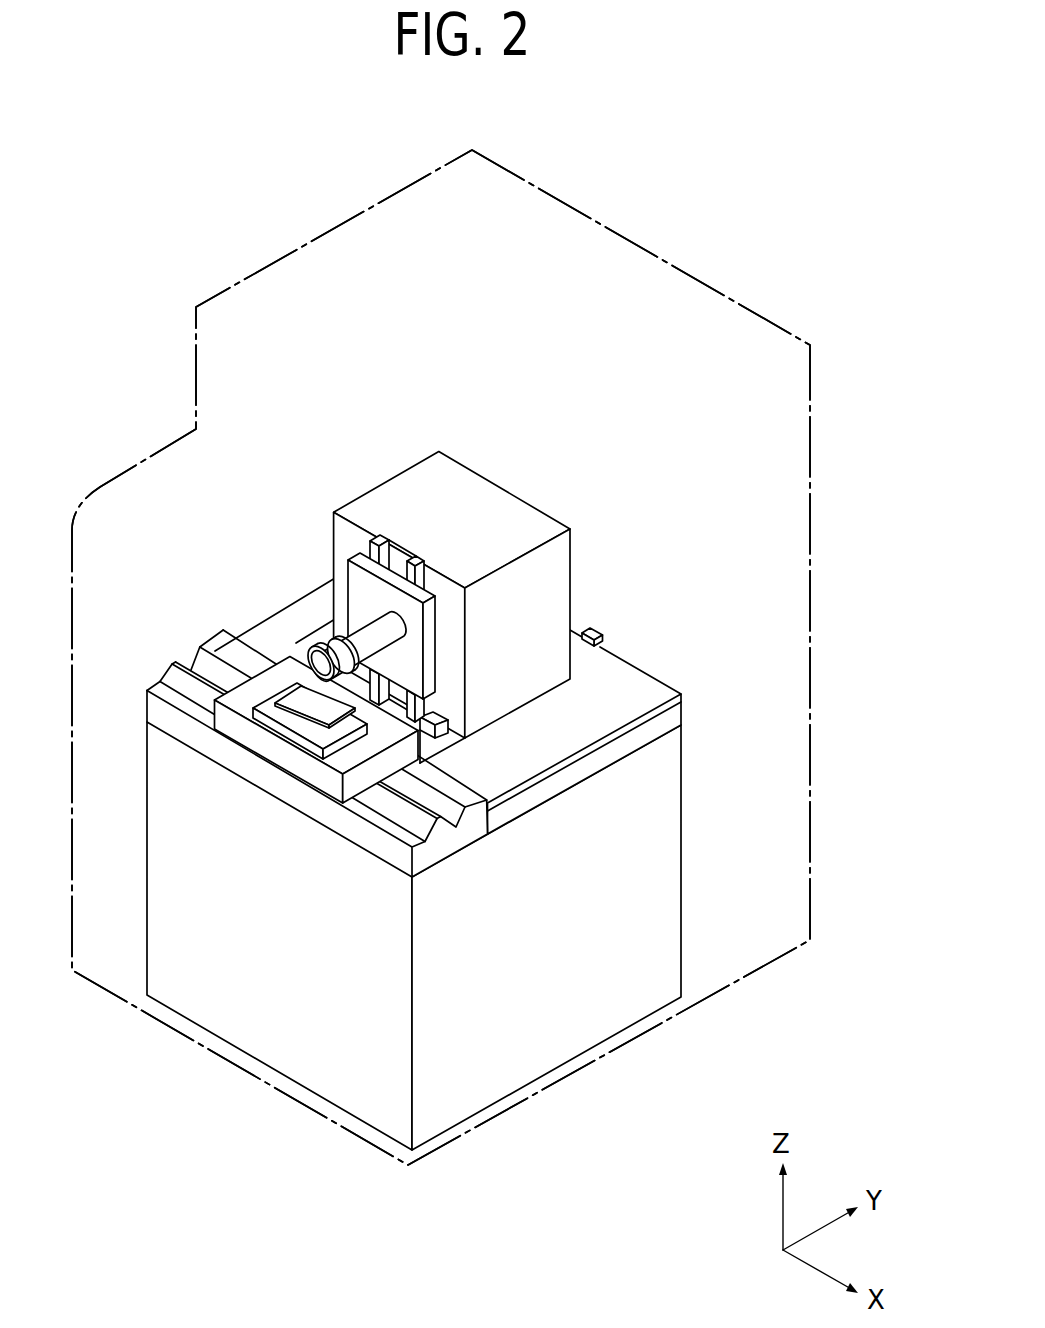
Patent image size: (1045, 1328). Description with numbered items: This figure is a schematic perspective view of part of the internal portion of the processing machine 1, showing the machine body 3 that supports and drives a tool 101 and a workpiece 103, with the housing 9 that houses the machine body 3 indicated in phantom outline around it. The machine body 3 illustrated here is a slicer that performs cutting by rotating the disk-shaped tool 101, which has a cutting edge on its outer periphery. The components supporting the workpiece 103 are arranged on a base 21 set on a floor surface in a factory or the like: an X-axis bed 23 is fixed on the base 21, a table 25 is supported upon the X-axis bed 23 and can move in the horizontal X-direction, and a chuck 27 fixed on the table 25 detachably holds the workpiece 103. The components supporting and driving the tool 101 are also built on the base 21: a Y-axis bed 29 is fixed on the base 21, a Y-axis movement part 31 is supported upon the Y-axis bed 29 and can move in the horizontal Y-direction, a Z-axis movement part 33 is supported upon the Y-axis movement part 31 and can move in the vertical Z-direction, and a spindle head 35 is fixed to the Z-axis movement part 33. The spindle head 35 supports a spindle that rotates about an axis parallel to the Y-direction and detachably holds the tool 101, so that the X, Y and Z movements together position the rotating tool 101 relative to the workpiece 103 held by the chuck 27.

The processing machine 1 is at (783, 204).
The machine body 3 is at (463, 643).
The housing 9 is at (815, 760).
The base 21 is at (663, 905).
The X-axis bed 23 is at (357, 830).
The table 25 is at (321, 783).
The chuck 27 is at (268, 710).
The Y-axis bed 29 is at (646, 693).
The Y-axis movement part 31 is at (553, 567).
The Z-axis movement part 33 is at (390, 600).
The spindle head 35 is at (374, 624).
The tool 101 is at (318, 650).
The workpiece 103 is at (303, 712).